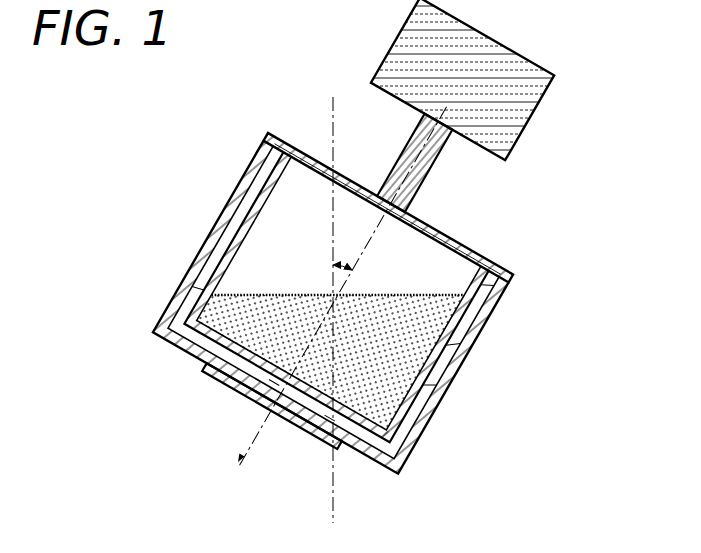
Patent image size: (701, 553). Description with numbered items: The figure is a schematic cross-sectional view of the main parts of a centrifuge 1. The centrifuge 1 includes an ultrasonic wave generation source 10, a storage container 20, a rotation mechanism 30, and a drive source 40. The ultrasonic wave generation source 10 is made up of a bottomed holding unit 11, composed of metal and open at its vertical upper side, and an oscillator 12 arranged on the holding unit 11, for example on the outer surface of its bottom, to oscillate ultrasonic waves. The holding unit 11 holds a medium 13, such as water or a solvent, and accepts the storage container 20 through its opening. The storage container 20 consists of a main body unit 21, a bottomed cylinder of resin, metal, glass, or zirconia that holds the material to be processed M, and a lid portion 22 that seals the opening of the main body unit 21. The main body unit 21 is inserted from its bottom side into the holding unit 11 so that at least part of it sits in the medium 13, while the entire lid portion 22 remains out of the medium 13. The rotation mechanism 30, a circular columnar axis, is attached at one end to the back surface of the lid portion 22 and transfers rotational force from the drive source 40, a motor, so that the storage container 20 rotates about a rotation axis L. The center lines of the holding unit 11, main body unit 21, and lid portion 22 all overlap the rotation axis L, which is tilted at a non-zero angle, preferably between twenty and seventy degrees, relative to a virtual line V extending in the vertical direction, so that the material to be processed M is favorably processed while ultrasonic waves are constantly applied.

The centrifuge 1 is at (466, 215).
The ultrasonic wave generation source 10 is at (331, 332).
The holding unit 11 is at (405, 468).
The oscillator 12 is at (343, 457).
The medium 13 is at (415, 438).
The storage container 20 is at (431, 209).
The main body unit 21 is at (483, 267).
The lid portion 22 is at (482, 250).
The rotation mechanism 30 is at (393, 167).
The drive source 40 is at (537, 115).
The material to be processed M is at (280, 300).
The virtual line V is at (333, 112).
The rotation axis L is at (252, 443).